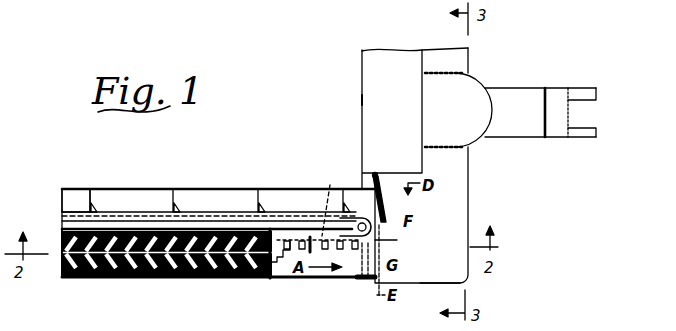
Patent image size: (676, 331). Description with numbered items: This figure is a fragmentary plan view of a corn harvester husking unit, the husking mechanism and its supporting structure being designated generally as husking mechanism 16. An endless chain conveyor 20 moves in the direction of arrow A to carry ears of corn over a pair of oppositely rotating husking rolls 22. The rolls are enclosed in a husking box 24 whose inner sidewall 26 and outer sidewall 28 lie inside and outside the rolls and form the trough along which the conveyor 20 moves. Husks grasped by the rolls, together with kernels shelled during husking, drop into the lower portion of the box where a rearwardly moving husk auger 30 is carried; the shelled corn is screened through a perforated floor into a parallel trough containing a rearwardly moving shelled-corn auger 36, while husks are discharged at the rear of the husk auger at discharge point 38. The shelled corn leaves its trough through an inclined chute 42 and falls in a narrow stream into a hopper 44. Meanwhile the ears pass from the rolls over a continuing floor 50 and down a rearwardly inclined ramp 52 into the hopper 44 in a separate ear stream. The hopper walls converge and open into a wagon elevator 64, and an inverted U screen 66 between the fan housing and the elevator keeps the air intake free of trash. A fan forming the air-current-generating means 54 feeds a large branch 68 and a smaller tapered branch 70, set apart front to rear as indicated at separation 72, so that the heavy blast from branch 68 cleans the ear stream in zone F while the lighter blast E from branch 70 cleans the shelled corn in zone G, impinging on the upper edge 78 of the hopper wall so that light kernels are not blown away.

The husking mechanism 16 is at (147, 158).
The endless chain conveyor 20 is at (216, 216).
The husking rolls 22 is at (60, 240).
The husking box 24 is at (72, 181).
The inner sidewall 26 is at (100, 188).
The outer sidewall 28 is at (93, 279).
The husk auger 30 is at (141, 278).
The shelled-corn auger 36 is at (329, 202).
The husk discharge point 38 is at (294, 293).
The chute 42 is at (367, 281).
The hopper 44 is at (466, 182).
The continuing floor 50 is at (321, 279).
The ramp 52 is at (396, 244).
The air-current-generating means 54 is at (354, 100).
The wagon elevator 64 is at (522, 97).
The screen 66 is at (476, 86).
The large air-current-directing branch 68 is at (420, 161).
The small air-current-directing branch 70 is at (386, 213).
The fore and aft separation of branches 72 is at (389, 167).
The upper edge of hopper wall 78 is at (433, 284).